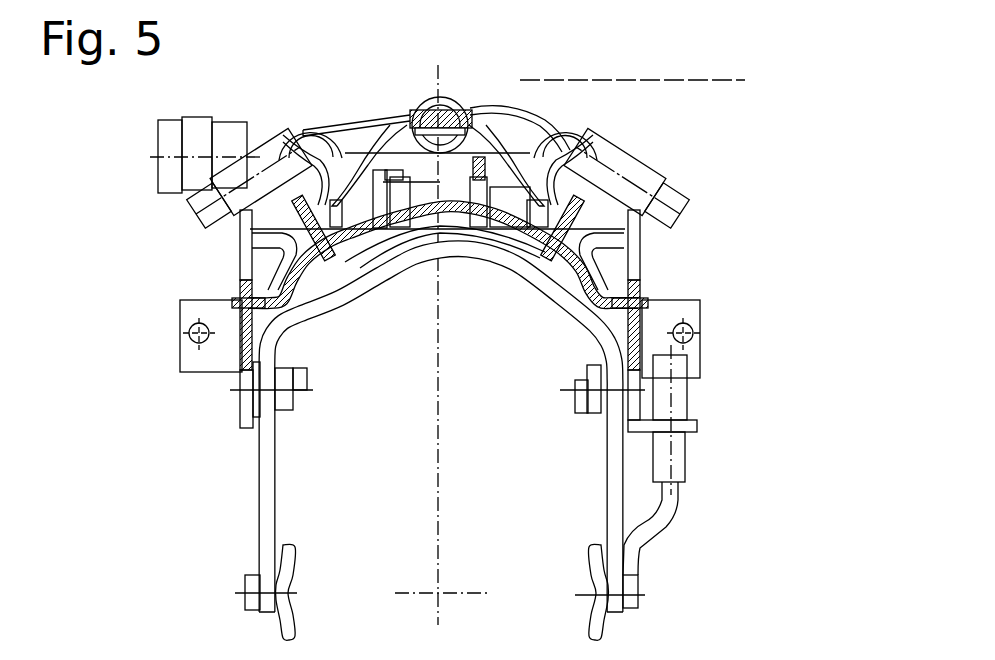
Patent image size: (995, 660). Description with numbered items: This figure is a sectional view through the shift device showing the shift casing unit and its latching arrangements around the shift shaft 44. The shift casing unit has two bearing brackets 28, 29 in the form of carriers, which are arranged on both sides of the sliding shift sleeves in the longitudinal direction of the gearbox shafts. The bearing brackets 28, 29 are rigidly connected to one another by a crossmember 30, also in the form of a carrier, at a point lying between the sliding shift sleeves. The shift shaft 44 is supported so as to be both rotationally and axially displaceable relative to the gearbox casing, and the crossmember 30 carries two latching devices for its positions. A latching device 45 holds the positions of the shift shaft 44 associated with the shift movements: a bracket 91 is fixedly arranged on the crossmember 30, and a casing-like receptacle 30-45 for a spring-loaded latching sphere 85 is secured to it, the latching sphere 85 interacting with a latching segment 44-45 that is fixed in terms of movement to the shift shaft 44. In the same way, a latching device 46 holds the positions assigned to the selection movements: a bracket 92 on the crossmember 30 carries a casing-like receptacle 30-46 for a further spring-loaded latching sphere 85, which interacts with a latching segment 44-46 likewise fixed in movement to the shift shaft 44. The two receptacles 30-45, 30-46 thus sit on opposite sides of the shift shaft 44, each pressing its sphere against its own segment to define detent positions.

The bearing bracket 28 is at (648, 263).
The bearing bracket 29 is at (238, 258).
The crossmember 30 is at (512, 240).
The casing-like receptacle 30-45 is at (632, 168).
The casing-like receptacle 30-46 is at (245, 170).
The shift shaft 44 is at (462, 97).
The latching segment 44-45 is at (455, 245).
The latching segment 44-46 is at (353, 123).
The latching device 45 is at (690, 198).
The latching device 46 is at (200, 212).
The latching sphere 85 is at (300, 160).
The bracket 91 is at (558, 247).
The bracket 92 is at (315, 255).